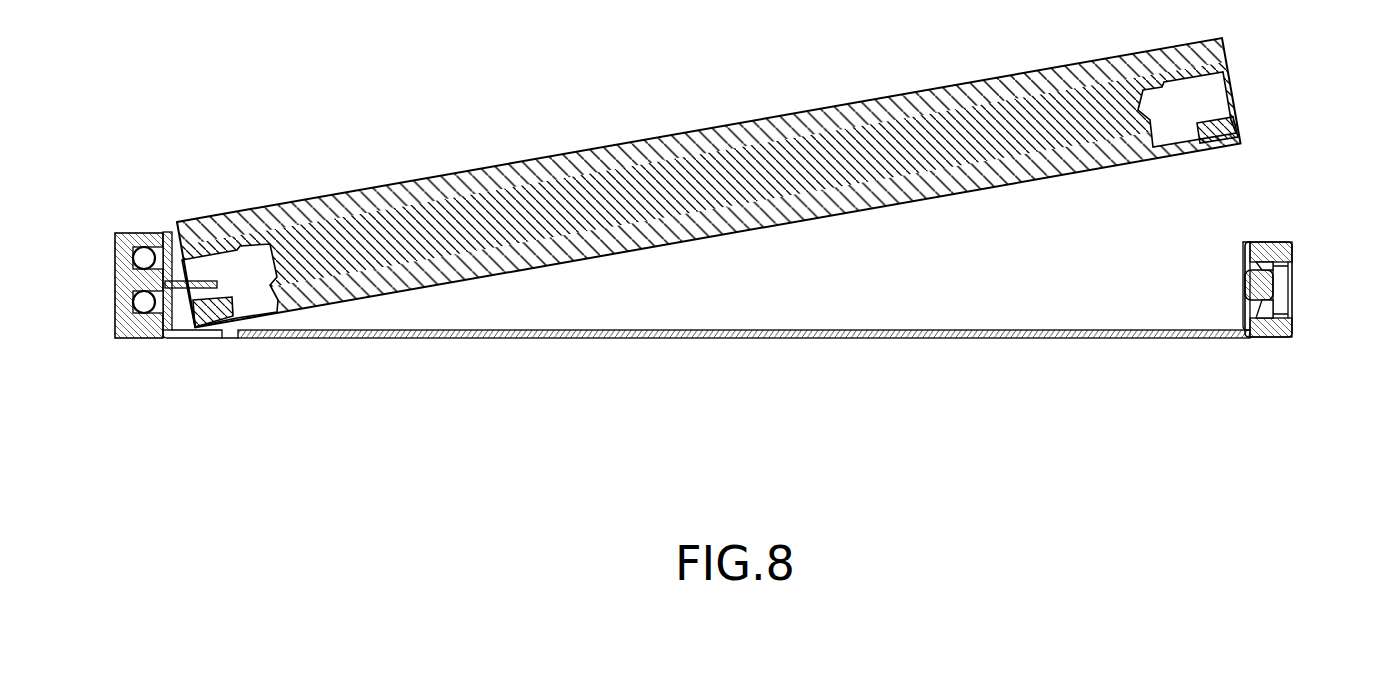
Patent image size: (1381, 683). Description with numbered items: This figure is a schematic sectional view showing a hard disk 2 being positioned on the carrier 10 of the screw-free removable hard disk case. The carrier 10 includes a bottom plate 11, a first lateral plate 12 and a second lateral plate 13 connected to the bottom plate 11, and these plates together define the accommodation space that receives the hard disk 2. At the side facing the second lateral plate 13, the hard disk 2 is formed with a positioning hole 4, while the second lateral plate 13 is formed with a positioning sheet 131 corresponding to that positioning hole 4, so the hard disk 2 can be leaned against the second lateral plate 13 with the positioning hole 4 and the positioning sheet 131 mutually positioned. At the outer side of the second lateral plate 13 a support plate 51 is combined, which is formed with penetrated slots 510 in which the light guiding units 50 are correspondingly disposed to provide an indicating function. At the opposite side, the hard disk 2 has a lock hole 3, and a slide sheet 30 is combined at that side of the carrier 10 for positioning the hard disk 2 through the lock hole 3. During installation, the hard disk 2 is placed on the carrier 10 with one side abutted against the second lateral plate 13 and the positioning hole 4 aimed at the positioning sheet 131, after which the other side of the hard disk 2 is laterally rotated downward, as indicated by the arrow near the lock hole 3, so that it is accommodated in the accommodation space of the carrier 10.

The hard disk 2 is at (582, 140).
The lock hole 3 is at (1213, 96).
The positioning hole 4 is at (220, 270).
The carrier 10 is at (706, 299).
The bottom plate 11 is at (885, 334).
The first lateral plate 12 is at (1247, 246).
The second lateral plate 13 is at (168, 240).
The positioning sheet 131 is at (190, 300).
The slide sheet 30 is at (1293, 232).
The light guiding unit 50 is at (134, 257).
The support plate 51 is at (112, 239).
The penetrated slot 510 is at (160, 250).